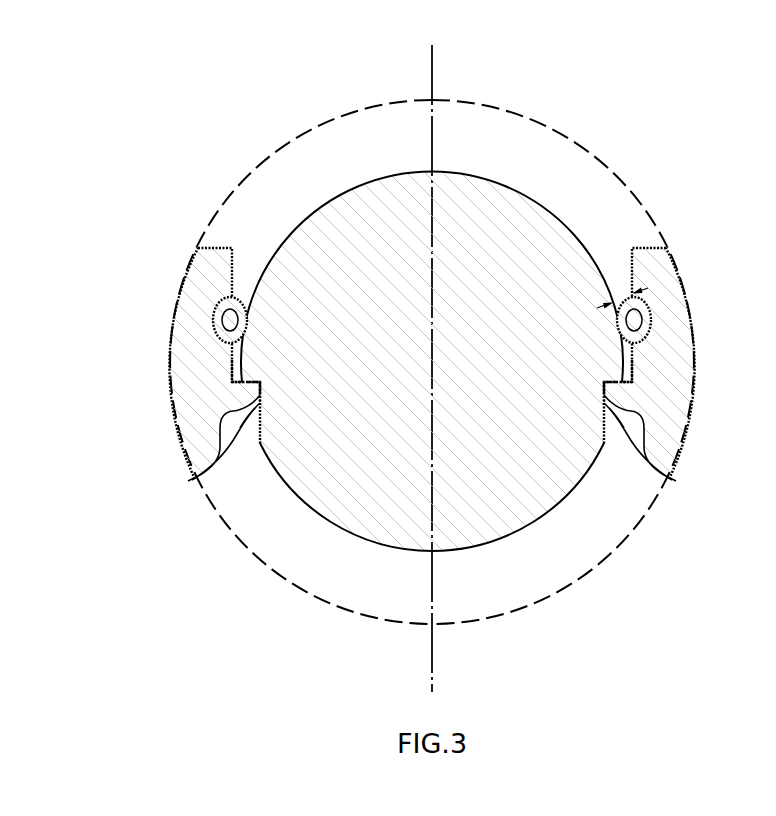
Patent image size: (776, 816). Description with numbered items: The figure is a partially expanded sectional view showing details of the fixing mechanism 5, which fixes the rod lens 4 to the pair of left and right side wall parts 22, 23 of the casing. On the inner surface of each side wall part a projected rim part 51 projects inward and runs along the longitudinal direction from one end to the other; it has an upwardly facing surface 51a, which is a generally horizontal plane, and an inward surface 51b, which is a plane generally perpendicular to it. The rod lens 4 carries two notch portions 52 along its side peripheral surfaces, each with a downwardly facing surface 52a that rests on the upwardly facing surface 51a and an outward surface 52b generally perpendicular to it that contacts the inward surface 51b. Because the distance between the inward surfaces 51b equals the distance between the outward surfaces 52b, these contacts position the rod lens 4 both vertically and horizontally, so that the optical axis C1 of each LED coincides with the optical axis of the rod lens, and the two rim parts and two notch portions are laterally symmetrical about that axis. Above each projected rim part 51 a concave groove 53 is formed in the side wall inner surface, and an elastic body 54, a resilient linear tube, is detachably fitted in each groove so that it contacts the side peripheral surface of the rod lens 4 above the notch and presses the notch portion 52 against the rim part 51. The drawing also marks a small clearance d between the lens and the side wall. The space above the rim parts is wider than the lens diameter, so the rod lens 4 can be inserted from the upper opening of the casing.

The rod lens 4 is at (457, 172).
The fixing mechanism 5 is at (203, 289).
The left side wall part 22 is at (172, 341).
The right side wall part 23 is at (692, 341).
The projected rim part 51 is at (222, 417).
The upwardly facing surface 51a is at (230, 373).
The inward surface 51b is at (262, 397).
The notch portion 52 is at (200, 478).
The downwardly facing surface 52a is at (263, 387).
The outward surface 52b is at (252, 428).
The concave groove 53 is at (213, 311).
The elastic body 54 is at (238, 297).
The clearance distance d is at (617, 294).
The optical axis of LED C1 is at (432, 359).